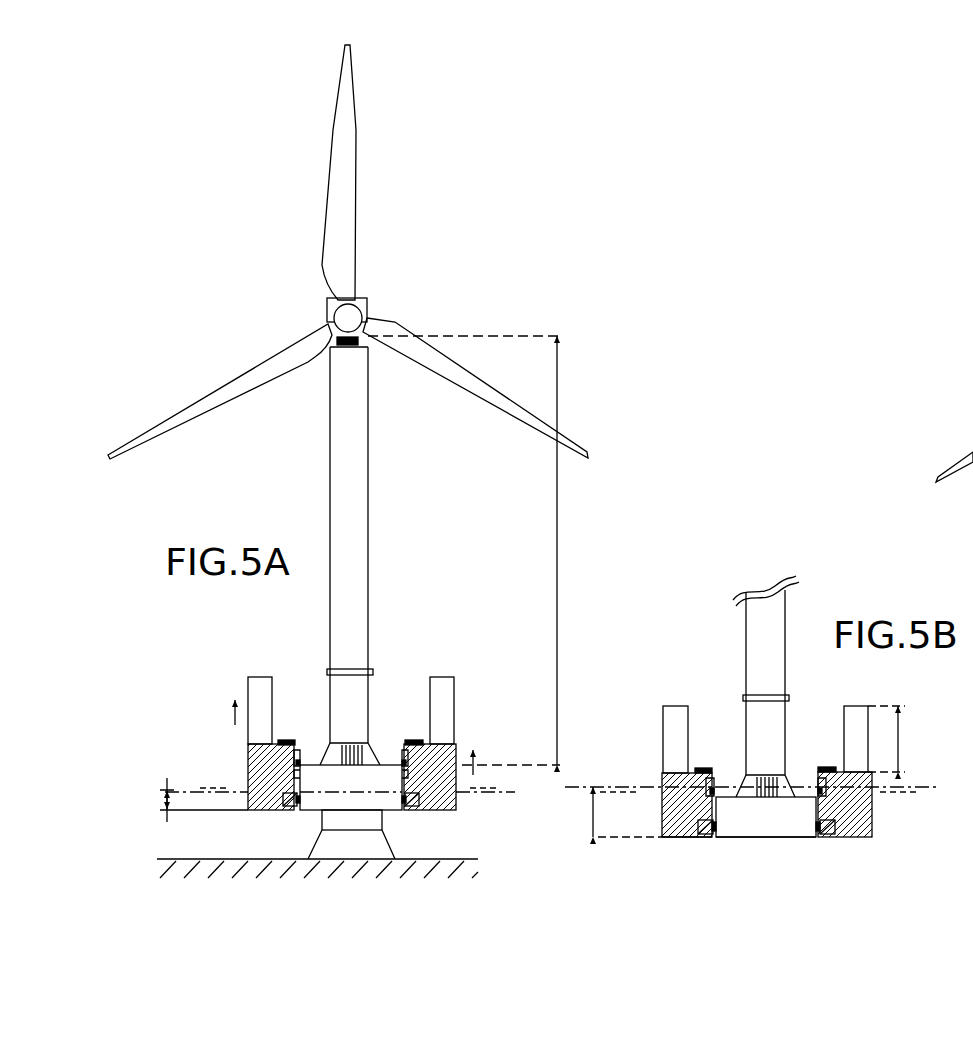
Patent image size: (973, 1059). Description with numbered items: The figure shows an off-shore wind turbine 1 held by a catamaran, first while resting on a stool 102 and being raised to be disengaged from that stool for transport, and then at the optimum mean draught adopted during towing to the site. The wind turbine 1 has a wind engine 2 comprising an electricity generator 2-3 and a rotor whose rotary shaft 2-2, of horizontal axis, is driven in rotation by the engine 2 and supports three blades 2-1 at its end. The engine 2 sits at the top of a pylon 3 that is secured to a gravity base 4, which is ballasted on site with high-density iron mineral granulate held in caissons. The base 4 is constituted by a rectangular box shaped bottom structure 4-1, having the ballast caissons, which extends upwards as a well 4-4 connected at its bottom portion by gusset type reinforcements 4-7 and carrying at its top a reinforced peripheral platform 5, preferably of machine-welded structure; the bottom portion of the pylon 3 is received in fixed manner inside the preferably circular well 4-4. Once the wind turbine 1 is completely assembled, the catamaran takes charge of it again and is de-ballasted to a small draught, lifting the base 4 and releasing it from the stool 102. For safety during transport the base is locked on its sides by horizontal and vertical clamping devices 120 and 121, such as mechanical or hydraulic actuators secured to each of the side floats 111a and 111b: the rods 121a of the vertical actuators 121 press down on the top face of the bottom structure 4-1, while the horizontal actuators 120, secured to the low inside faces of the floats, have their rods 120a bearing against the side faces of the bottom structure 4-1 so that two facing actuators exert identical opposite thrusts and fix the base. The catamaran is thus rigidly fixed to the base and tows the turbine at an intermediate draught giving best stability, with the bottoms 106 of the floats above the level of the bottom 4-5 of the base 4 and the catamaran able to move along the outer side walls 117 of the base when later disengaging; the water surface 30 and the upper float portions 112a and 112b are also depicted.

In FIG. 5A, the off-shore wind turbine 1 is at (160, 277).
In FIG. 5B, the off-shore wind turbine 1 is at (972, 297).
In FIG. 5A, the wind engine 2 is at (303, 303).
In FIG. 5A, the blades 2-1 is at (346, 136).
In FIG. 5B, the blades 2-1 is at (954, 449).
In FIG. 5A, the rotary shaft 2-2 is at (352, 315).
In FIG. 5A, the electricity generator 2-3 is at (360, 300).
In FIG. 5A, the pylon 3 is at (368, 535).
In FIG. 5B, the pylon 3 is at (774, 605).
In FIG. 5A, the gravity base 4 is at (417, 628).
In FIG. 5B, the gravity base 4 is at (831, 652).
In FIG. 5A, the rectangular box shaped bottom structure 4-1 is at (378, 745).
In FIG. 5B, the rectangular box shaped bottom structure 4-1 is at (796, 775).
In FIG. 5A, the well 4-4 is at (345, 692).
In FIG. 5B, the well 4-4 is at (762, 722).
In FIG. 5B, the bottom of the base 4-5 is at (808, 838).
In FIG. 5B, the gusset type reinforcements 4-7 is at (745, 780).
In FIG. 5A, the reinforced peripheral platform 5 is at (340, 665).
In FIG. 5B, the reinforced peripheral platform 5 is at (748, 700).
In FIG. 5A, the water surface 30 is at (218, 794).
In FIG. 5B, the water surface 30 is at (925, 788).
In FIG. 5A, the stool 102 is at (392, 838).
In FIG. 5B, the bottoms of the floats 106 is at (668, 838).
In FIG. 5A, the side float 111a is at (258, 762).
In FIG. 5A, the side float 111b is at (452, 752).
In FIG. 5A, the left column 112a is at (262, 695).
In FIG. 5A, the right column 112b is at (450, 695).
In FIG. 5B, the outer side walls 117 is at (710, 810).
In FIG. 5A, the horizontal clamping devices 120 is at (300, 808).
In FIG. 5B, the horizontal clamping devices 120 is at (710, 838).
In FIG. 5B, the rods of the horizontal actuators 120a is at (720, 838).
In FIG. 5A, the vertical clamping devices 121 is at (296, 748).
In FIG. 5A, the rods of the vertical actuators 121a is at (312, 768).